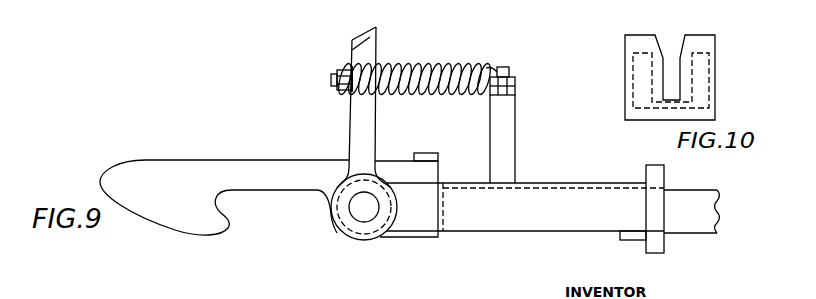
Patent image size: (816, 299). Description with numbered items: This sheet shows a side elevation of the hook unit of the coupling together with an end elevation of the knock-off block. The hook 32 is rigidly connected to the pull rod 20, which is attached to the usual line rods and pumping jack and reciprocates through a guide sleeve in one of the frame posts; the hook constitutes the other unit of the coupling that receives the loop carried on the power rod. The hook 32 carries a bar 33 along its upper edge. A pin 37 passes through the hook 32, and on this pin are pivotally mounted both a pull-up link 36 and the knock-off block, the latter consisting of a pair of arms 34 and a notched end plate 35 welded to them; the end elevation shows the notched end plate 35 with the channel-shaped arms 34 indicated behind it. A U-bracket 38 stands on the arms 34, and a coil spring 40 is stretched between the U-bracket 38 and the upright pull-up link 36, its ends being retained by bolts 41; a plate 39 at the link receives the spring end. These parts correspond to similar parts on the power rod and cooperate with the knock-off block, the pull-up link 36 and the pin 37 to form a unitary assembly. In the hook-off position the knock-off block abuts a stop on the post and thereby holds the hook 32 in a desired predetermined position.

In FIG. 9, the pull rod 20 is at (705, 212).
In FIG. 9, the hook 32 is at (225, 165).
In FIG. 9, the bar 33 is at (425, 156).
In FIG. 9, the arms 34 is at (557, 190).
In FIG. 10, the arms 34 is at (697, 87).
In FIG. 9, the notched end plate 35 is at (657, 193).
In FIG. 10, the notched end plate 35 is at (697, 42).
In FIG. 9, the pull-up link 36 is at (368, 35).
In FIG. 9, the pin 37 is at (363, 212).
In FIG. 9, the U-bracket 38 is at (507, 133).
In FIG. 9, the plate 39 is at (352, 90).
In FIG. 9, the coil spring 40 is at (421, 67).
In FIG. 9, the bolts 41 is at (337, 86).